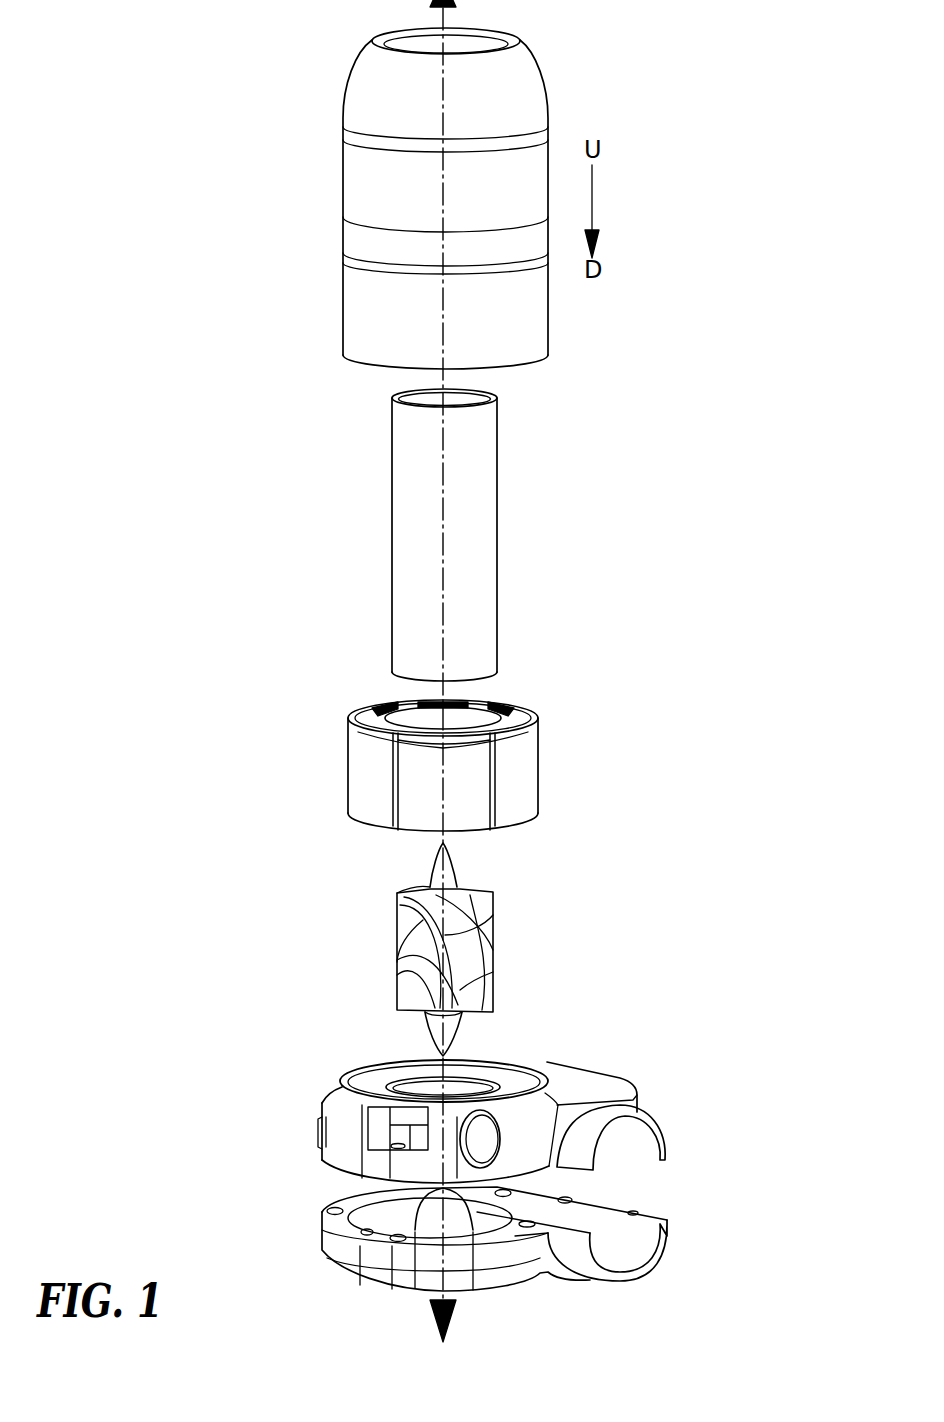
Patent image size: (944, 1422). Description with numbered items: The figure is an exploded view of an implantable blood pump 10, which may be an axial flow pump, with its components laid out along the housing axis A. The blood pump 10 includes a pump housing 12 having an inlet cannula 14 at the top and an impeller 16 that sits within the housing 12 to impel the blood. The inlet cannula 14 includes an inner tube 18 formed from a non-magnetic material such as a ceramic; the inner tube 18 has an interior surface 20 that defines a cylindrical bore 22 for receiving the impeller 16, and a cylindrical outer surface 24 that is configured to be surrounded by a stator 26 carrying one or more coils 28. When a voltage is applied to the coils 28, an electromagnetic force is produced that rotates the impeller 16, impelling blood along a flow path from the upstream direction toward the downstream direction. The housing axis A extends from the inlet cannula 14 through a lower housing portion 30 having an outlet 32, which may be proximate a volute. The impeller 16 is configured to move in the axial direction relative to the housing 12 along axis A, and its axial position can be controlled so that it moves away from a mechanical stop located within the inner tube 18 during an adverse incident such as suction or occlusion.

The blood pump 10 is at (228, 335).
The pump housing 12 is at (645, 248).
The inlet cannula 14 is at (344, 192).
The impeller 16 is at (420, 918).
The inner tube 18 is at (456, 529).
The interior surface 20 is at (477, 393).
The cylindrical bore 22 is at (415, 392).
The cylindrical outer surface 24 is at (392, 460).
The stator 26 is at (488, 756).
The coils 28 is at (528, 710).
The lower housing portion 30 is at (330, 1105).
The outlet 32 is at (627, 1251).
The housing axis A is at (443, 97).